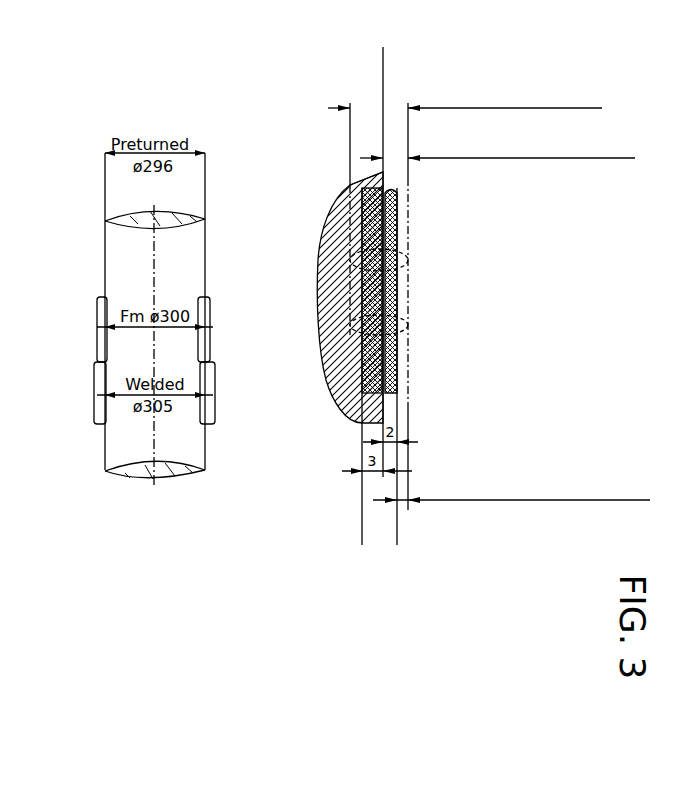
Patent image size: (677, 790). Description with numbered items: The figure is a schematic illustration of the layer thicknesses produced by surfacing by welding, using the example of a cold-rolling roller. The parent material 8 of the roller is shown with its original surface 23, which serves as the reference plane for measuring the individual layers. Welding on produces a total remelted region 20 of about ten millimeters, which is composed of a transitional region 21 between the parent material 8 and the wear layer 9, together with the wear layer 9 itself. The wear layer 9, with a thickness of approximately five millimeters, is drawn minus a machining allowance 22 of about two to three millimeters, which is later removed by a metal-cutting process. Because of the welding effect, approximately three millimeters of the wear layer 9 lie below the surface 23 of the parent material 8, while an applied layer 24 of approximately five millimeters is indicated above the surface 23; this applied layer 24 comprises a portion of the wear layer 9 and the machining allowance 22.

The parent material 8 is at (352, 408).
The wear layer 9 is at (405, 347).
The total remelted region 20 is at (479, 100).
The transitional region 21 is at (362, 200).
The machining allowance 22 is at (524, 494).
The surface of the parent material 23 is at (383, 62).
The applied layer 24 is at (511, 150).